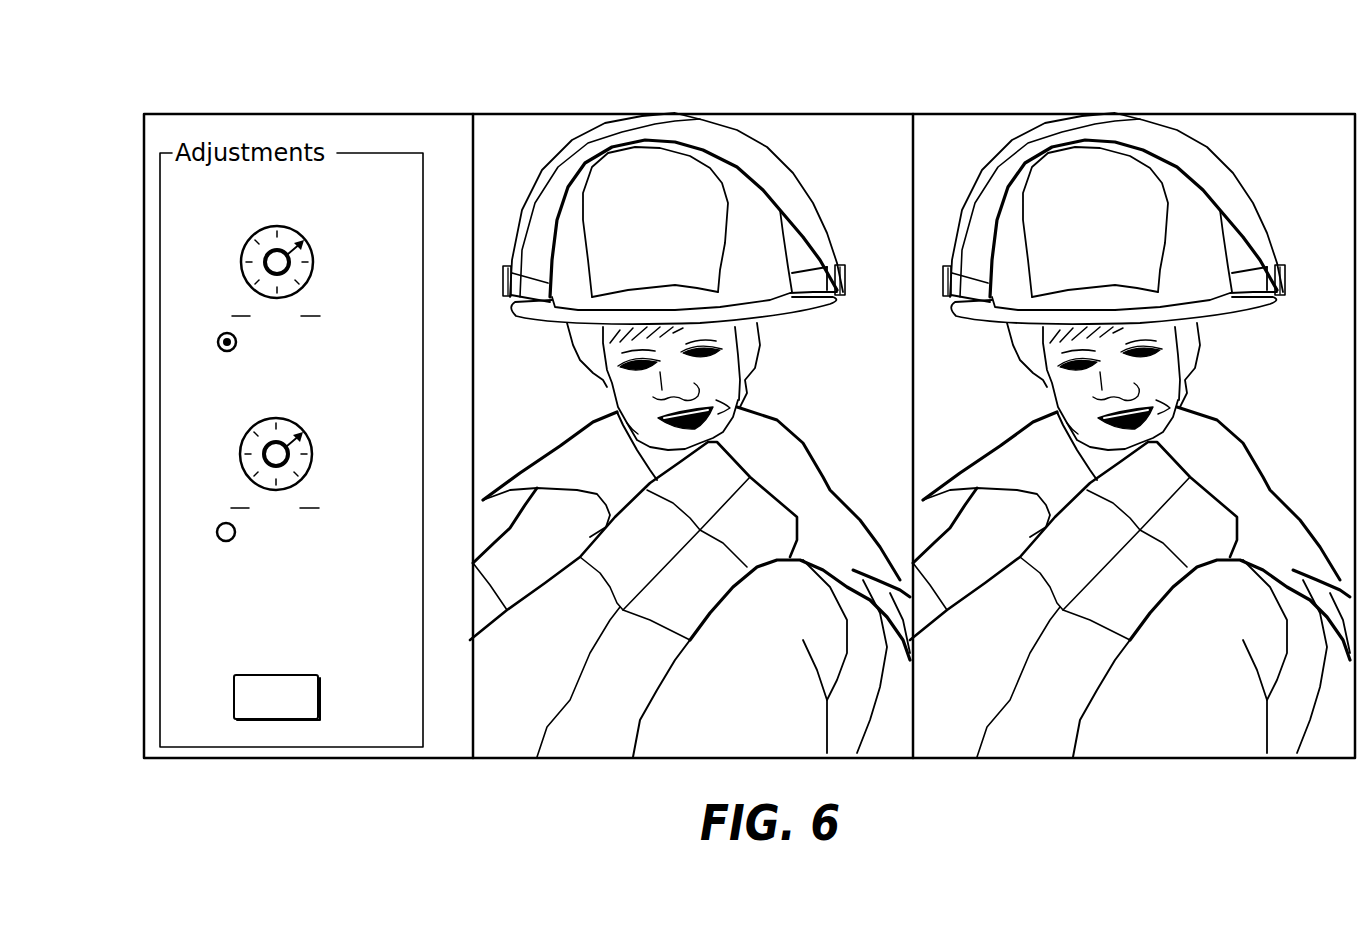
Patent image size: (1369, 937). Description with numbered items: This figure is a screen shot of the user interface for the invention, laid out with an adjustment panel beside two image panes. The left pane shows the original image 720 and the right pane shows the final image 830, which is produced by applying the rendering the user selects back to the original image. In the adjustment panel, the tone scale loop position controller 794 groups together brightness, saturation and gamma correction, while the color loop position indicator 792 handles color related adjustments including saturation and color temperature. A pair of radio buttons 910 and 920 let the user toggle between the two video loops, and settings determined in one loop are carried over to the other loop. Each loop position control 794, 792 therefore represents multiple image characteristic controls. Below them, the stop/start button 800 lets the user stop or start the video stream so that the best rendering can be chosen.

The original image 720 is at (568, 113).
The final image 830 is at (1009, 113).
The tone scale loop position controller 794 is at (238, 264).
The color loop position indicator 792 is at (238, 456).
The radio button 910 is at (216, 344).
The radio button 920 is at (216, 534).
The stop/start button 800 is at (268, 720).